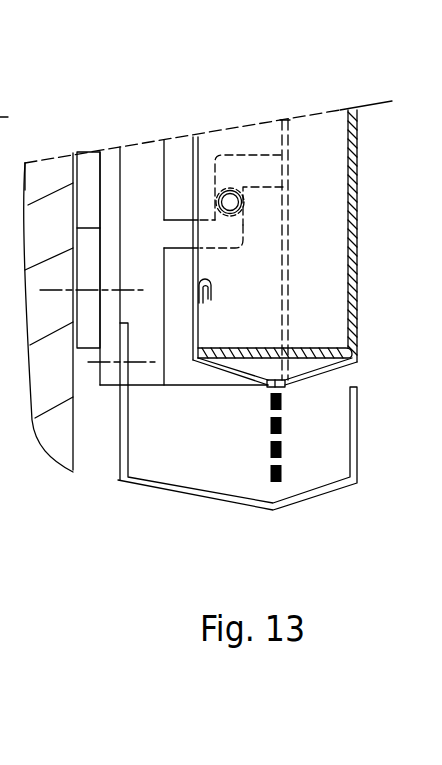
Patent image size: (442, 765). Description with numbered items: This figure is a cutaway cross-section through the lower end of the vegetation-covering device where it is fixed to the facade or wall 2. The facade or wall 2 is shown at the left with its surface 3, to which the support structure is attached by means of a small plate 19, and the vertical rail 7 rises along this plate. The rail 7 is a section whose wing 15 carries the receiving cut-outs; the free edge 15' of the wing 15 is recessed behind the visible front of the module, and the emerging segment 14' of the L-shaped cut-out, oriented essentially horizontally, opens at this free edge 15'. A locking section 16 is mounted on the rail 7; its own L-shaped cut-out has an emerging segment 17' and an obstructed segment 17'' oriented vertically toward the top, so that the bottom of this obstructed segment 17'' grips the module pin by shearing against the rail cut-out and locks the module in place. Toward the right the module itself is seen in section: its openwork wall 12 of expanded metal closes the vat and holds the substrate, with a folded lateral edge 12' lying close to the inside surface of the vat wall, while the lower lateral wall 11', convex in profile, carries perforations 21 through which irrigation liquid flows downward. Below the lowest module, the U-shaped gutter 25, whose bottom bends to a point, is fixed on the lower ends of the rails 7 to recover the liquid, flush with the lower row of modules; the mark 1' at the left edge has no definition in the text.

The vehicle door 1' is at (12, 293).
The facade or wall 2 is at (65, 445).
The surface 3 is at (75, 460).
The rail 7 is at (108, 178).
The lower lateral wall 11' is at (310, 385).
The openwork wall 12 is at (306, 236).
The folded lateral edge 12' is at (313, 338).
The emerging segment 14' is at (248, 136).
The wing 15 is at (208, 236).
The free edge 15' is at (335, 185).
The locking section 16 is at (286, 140).
The emerging segment 17' is at (283, 397).
The obstructed segment 17'' is at (313, 253).
The small plate 19 is at (85, 250).
The perforations 21 is at (283, 385).
The gutter 25 is at (182, 488).